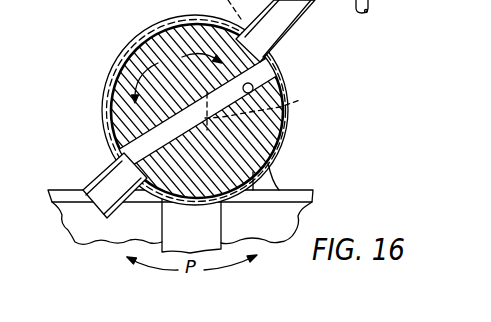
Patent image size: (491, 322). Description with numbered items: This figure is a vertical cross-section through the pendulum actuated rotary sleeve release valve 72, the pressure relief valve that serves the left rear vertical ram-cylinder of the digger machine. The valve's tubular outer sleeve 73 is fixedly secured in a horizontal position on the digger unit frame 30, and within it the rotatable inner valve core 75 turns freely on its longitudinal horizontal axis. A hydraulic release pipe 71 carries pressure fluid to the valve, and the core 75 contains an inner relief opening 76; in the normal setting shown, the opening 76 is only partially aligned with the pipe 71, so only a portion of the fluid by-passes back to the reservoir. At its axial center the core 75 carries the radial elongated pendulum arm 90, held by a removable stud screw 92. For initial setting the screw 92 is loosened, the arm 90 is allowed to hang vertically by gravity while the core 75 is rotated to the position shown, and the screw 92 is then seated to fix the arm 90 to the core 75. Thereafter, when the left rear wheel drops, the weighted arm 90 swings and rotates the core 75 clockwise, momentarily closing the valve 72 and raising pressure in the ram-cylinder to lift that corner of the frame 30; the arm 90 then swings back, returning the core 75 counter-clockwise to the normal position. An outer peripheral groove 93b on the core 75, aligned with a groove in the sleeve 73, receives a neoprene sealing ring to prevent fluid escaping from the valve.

The frame 30 is at (300, 223).
The hydraulic release pipe 71 is at (93, 182).
The pendulum actuated rotary sleeve release valve 72 is at (103, 76).
The outer sleeve 73 is at (266, 182).
The valve core 75 is at (262, 166).
The inner relief opening 76 is at (253, 87).
The pendulum arm 90 is at (208, 231).
The stud screw 92 is at (300, 100).
The outer peripheral groove 93b is at (103, 127).